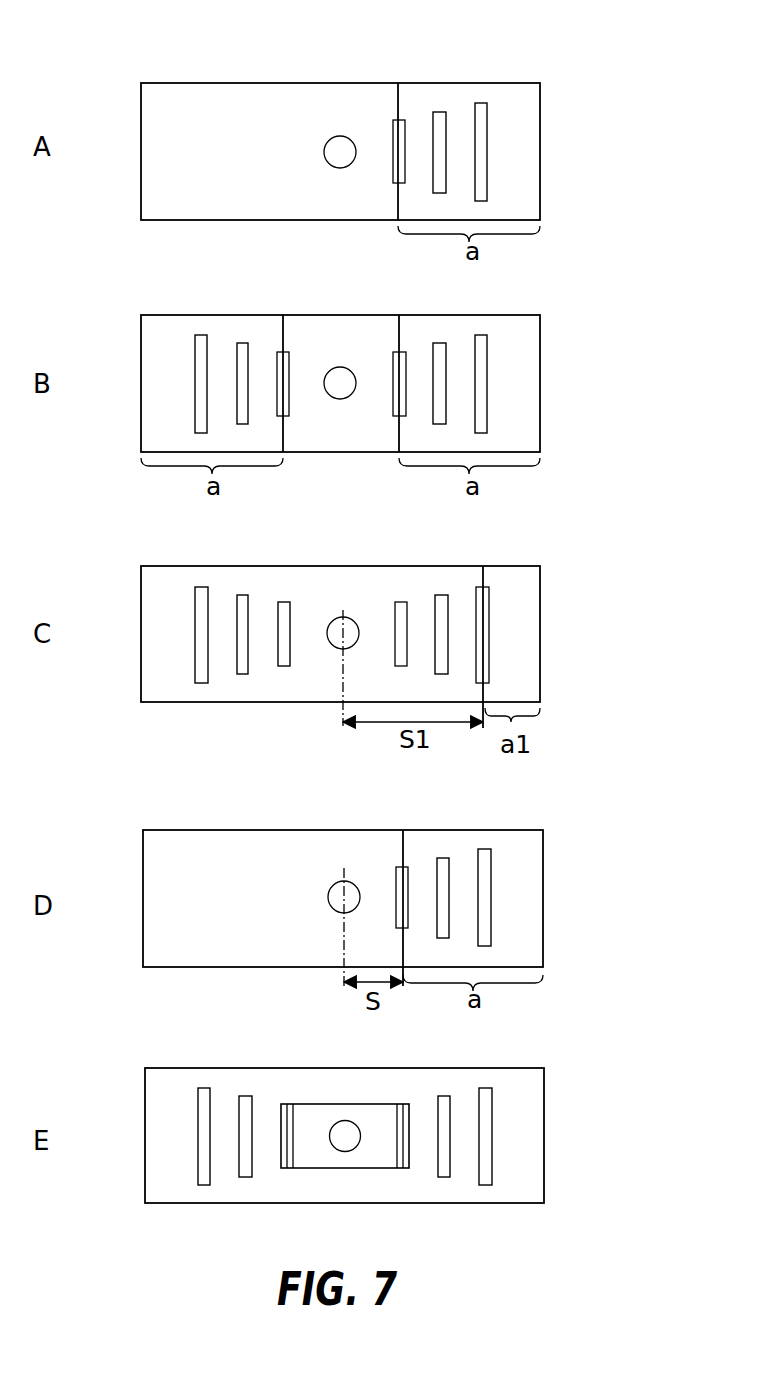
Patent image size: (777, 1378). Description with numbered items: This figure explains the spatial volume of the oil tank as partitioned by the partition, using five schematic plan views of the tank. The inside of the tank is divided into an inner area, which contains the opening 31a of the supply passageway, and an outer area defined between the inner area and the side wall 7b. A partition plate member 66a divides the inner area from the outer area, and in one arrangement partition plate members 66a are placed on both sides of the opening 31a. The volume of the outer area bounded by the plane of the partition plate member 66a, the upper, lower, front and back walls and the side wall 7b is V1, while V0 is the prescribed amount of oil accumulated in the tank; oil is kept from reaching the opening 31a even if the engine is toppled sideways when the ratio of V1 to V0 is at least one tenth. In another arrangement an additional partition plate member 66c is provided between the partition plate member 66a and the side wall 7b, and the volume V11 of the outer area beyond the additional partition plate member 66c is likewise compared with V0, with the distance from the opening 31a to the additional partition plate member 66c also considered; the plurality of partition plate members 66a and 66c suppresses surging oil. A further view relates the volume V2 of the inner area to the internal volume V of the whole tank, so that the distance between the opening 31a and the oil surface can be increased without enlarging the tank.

The side wall 7b is at (540, 148).
The opening 31a is at (338, 168).
The partition plate member 66a is at (398, 105).
The additional partition plate member 66c is at (477, 626).
The prescribed amount of oil V0 is at (258, 76).
The volume of outer area V1 is at (513, 90).
The volume of outer area a1 V11 is at (513, 572).
The volume of inner area V2 is at (310, 1120).
The internal volume of oil tank V is at (516, 1108).